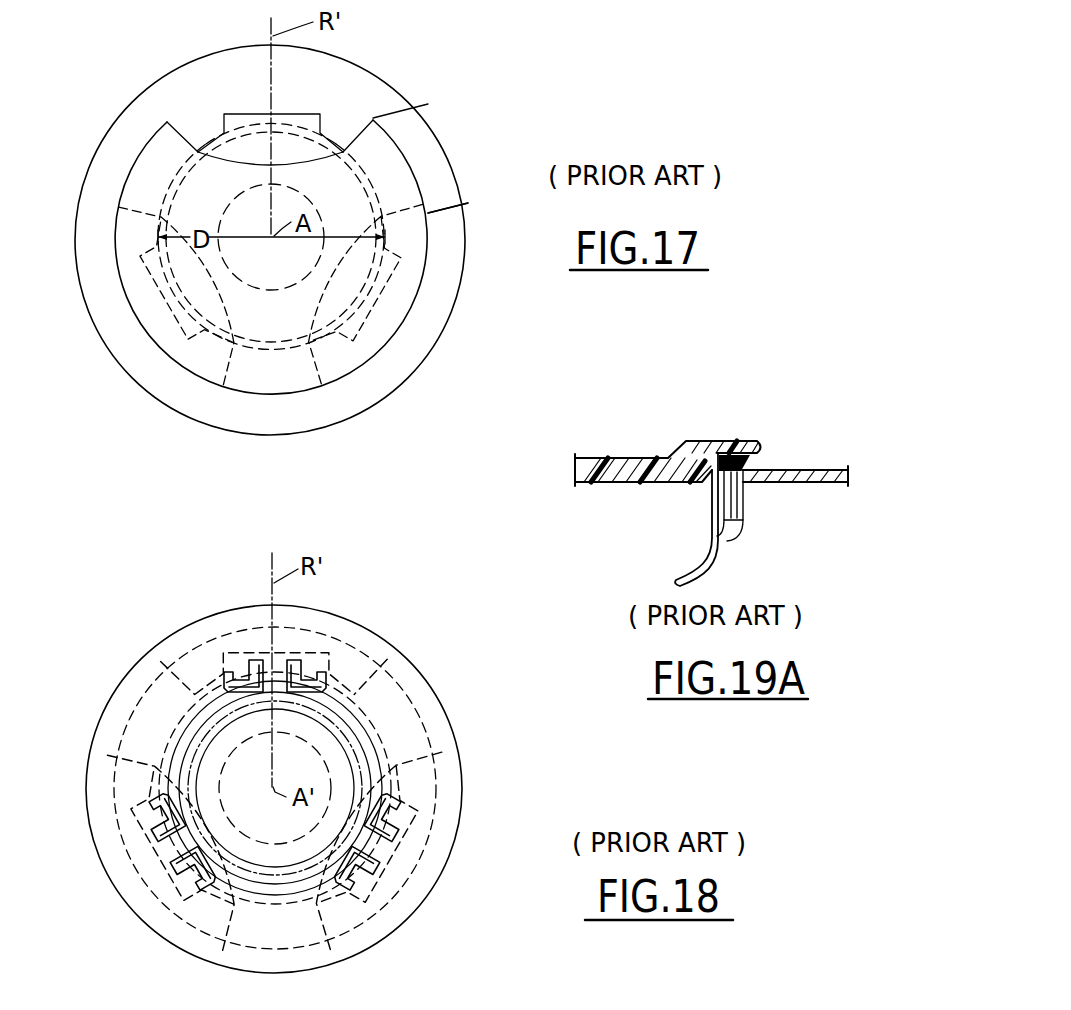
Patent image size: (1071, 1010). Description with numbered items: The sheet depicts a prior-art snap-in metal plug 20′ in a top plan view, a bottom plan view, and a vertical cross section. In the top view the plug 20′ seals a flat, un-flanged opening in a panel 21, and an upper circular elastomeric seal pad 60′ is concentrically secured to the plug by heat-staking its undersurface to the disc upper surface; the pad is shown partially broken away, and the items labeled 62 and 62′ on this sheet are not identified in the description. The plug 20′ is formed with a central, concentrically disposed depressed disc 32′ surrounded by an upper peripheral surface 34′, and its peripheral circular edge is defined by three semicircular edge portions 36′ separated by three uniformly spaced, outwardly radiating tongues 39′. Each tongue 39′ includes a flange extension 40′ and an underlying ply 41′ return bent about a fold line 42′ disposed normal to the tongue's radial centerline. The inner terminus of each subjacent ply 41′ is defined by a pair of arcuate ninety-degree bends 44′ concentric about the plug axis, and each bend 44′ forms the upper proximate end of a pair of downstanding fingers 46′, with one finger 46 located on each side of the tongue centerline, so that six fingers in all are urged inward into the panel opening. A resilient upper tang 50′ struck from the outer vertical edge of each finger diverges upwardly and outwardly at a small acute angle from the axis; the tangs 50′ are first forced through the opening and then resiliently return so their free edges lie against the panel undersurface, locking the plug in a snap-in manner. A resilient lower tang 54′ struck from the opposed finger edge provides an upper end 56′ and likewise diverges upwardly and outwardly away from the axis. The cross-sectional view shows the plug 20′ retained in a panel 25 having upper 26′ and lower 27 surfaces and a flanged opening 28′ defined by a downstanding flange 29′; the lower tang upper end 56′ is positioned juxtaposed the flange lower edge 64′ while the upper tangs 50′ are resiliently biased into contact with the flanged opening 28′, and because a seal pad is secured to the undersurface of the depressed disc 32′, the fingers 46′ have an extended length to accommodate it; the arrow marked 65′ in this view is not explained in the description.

In FIG. 17, the panel 21 is at (365, 48).
In FIG. 17, the snap-in metal plug 20′ is at (341, 130).
In FIG. 19A, the snap-in metal plug 20′ is at (622, 455).
In FIG. 17, the semicircular edge portions 36′ is at (207, 143).
In FIG. 17, the flange extension 40′ is at (240, 116).
In FIG. 19A, the flange extension 40′ is at (697, 438).
In FIG. 17, the fold line 42′ is at (278, 113).
In FIG. 17, the tongues 39′ is at (308, 111).
In FIG. 18, the tongues 39′ is at (249, 645).
In FIG. 17, the upper peripheral surface 34′ is at (252, 151).
In FIG. 17, the depressed disc 32′ is at (299, 190).
In FIG. 18, the depressed disc 32′ is at (445, 686).
In FIG. 17, the seal pad 60′ is at (417, 166).
In FIG. 18, the seal pad 60′ is at (402, 668).
In FIG. 17, the segment 62 is at (468, 203).
In FIG. 18, the segment 62′ is at (430, 730).
In FIG. 18, the arcuate ninety degree bends 44′ is at (240, 672).
In FIG. 18, the downstanding fingers 46′ is at (217, 675).
In FIG. 19A, the downstanding fingers 46′ is at (712, 515).
In FIG. 18, the fingers 46 is at (322, 670).
In FIG. 18, the resilient upper tang 50′ is at (158, 793).
In FIG. 19A, the resilient upper tang 50′ is at (712, 489).
In FIG. 18, the resilient lower tang 54′ is at (150, 894).
In FIG. 19A, the resilient lower tang 54′ is at (729, 540).
In FIG. 19A, the direction arrow 65′ is at (572, 466).
In FIG. 19A, the underlying ply 41′ is at (743, 440).
In FIG. 19A, the flanged opening 28′ is at (740, 518).
In FIG. 19A, the upper end 56′ is at (738, 528).
In FIG. 19A, the panel flange lower edge 64′ is at (740, 523).
In FIG. 19A, the downstanding flange 29′ is at (760, 458).
In FIG. 19A, the upper surface 26′ is at (795, 470).
In FIG. 19A, the panel 25 is at (830, 464).
In FIG. 19A, the lower surface 27 is at (820, 481).